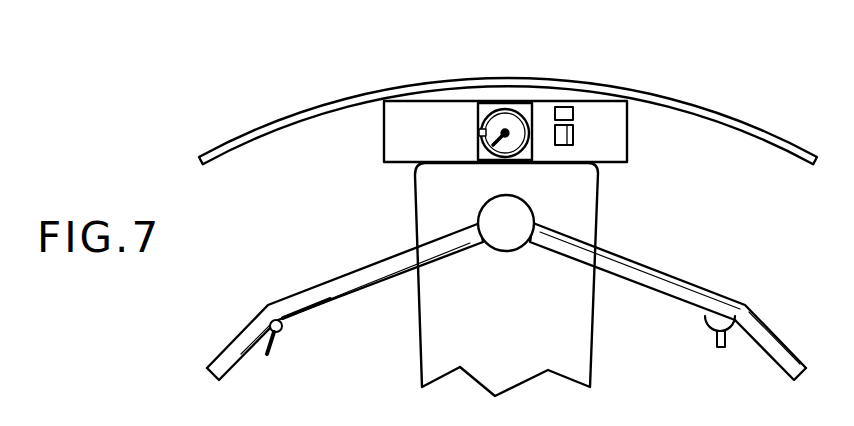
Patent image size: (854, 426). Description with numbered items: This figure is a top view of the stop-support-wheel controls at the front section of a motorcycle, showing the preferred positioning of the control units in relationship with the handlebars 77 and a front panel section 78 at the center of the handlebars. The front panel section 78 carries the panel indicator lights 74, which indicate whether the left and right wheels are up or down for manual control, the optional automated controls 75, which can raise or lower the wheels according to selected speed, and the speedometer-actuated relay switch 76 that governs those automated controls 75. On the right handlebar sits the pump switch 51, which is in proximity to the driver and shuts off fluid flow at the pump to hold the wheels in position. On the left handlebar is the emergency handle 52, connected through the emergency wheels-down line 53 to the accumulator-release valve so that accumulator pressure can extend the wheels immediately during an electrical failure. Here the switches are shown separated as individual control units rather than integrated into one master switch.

The pump switch 51 is at (722, 347).
The emergency handle 52 is at (273, 350).
The emergency wheels-down line 53 is at (310, 313).
The panel indicator lights 74 is at (565, 106).
The automated controls 75 is at (573, 135).
The speedometer-actuated relay switch 76 is at (480, 133).
The handlebars 77 is at (655, 270).
The front panel section 78 is at (608, 163).